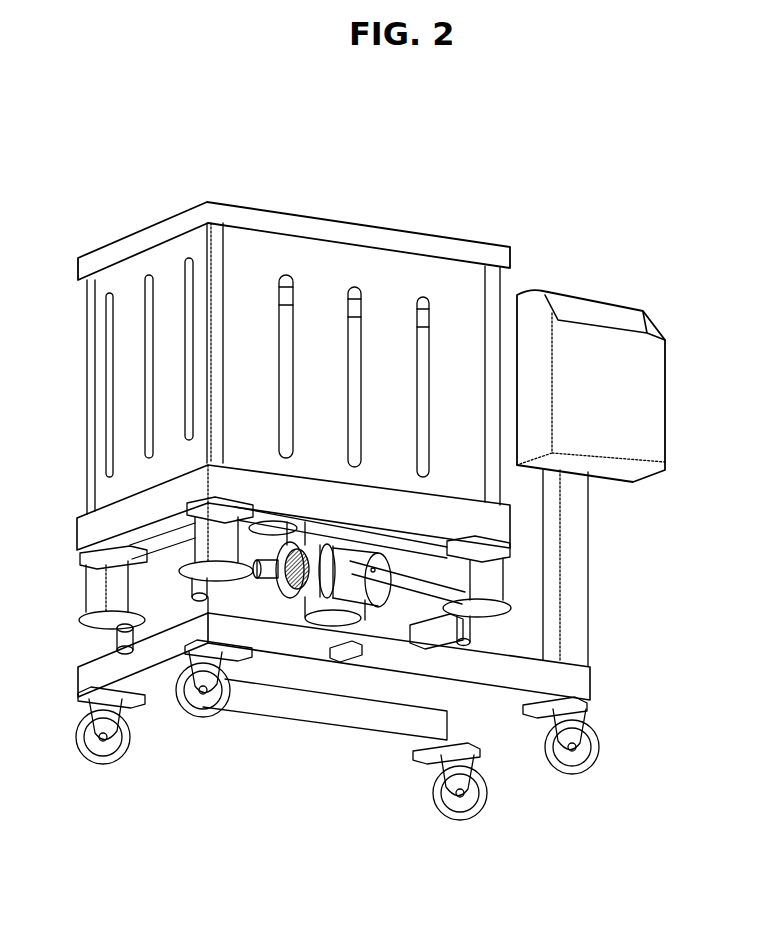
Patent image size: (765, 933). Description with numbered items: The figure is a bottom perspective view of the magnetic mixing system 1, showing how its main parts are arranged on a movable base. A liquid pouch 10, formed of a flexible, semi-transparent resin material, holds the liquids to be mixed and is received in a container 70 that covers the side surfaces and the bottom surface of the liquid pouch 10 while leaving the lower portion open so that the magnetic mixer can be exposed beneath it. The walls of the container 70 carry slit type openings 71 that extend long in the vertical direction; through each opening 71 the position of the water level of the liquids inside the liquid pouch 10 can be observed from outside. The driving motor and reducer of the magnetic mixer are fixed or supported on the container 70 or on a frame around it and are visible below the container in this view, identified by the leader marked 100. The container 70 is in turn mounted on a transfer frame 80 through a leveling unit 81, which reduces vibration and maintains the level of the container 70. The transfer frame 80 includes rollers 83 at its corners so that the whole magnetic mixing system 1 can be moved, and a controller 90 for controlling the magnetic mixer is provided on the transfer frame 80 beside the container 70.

The magnetic mixing system 1 is at (63, 187).
The liquid pouch 10 is at (428, 322).
The container 70 is at (250, 268).
The slit type opening 71 is at (360, 288).
The transfer frame 80 is at (600, 681).
The leveling unit 81 is at (92, 586).
The roller 83 is at (487, 810).
The controller 90 is at (602, 352).
The drive motor 100 is at (258, 650).